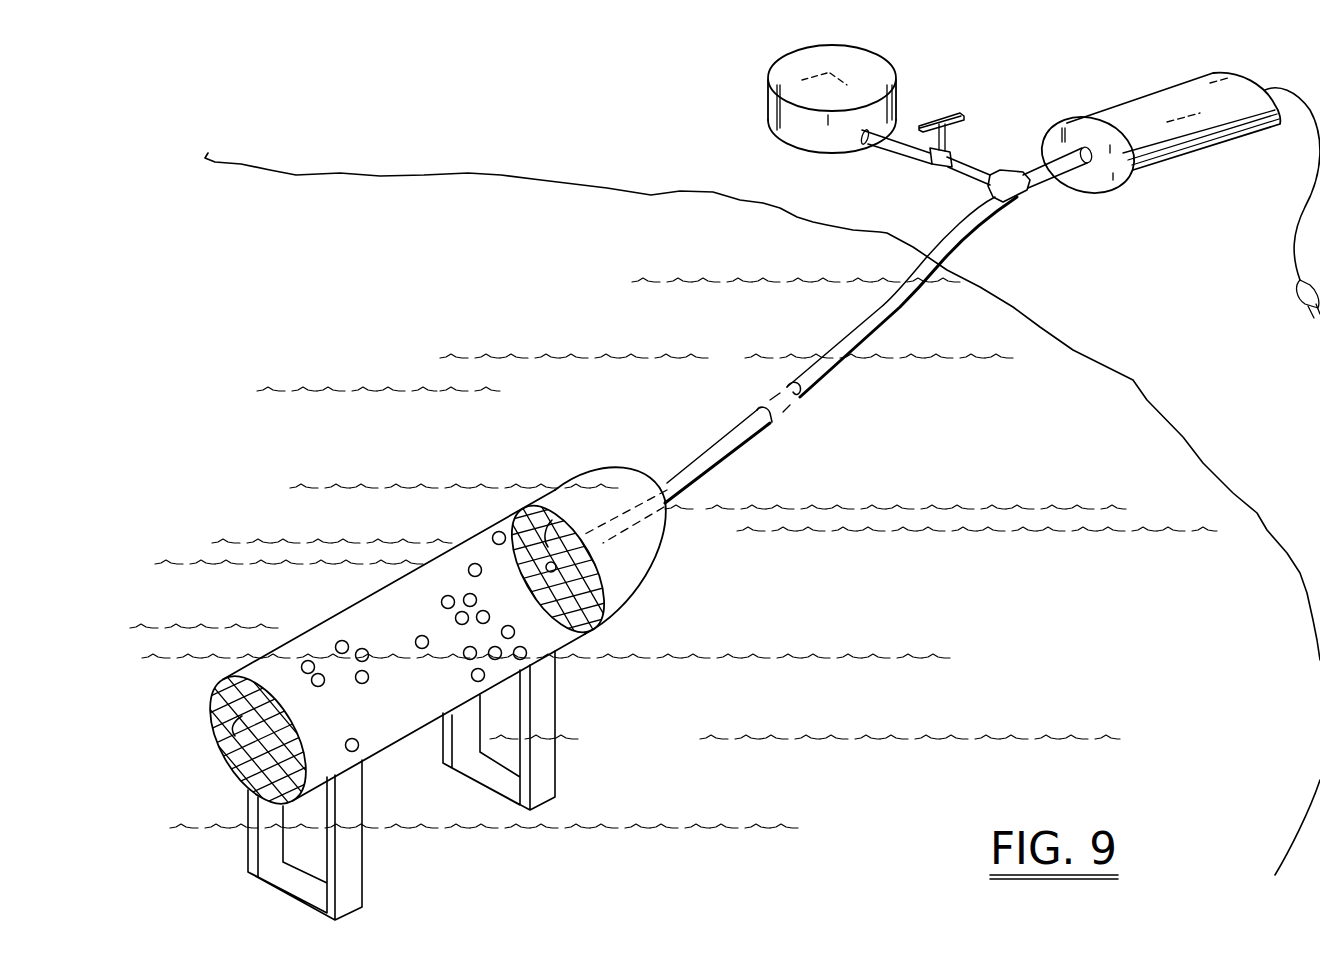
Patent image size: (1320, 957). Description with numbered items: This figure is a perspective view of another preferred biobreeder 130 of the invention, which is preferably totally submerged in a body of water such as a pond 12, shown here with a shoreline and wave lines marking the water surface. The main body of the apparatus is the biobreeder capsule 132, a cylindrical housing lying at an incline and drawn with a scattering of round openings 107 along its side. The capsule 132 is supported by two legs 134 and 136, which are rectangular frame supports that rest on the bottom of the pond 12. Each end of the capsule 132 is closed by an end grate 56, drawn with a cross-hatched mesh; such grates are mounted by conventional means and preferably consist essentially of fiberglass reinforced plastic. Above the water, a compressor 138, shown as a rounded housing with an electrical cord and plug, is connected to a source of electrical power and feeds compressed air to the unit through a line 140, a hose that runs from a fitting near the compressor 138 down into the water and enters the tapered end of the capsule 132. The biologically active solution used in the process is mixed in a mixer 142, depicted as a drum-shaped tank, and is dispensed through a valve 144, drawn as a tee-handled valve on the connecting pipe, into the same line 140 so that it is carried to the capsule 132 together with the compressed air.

The pond 12 is at (957, 357).
The end grate 56 is at (550, 516).
The perforations 107 is at (456, 616).
The biobreeder 130 is at (572, 130).
The biobreeder capsule 132 is at (472, 520).
The leg 134 is at (353, 868).
The leg 136 is at (543, 775).
The compressor 138 is at (1175, 138).
The line 140 is at (923, 265).
The mixer 142 is at (797, 118).
The valve 144 is at (963, 126).